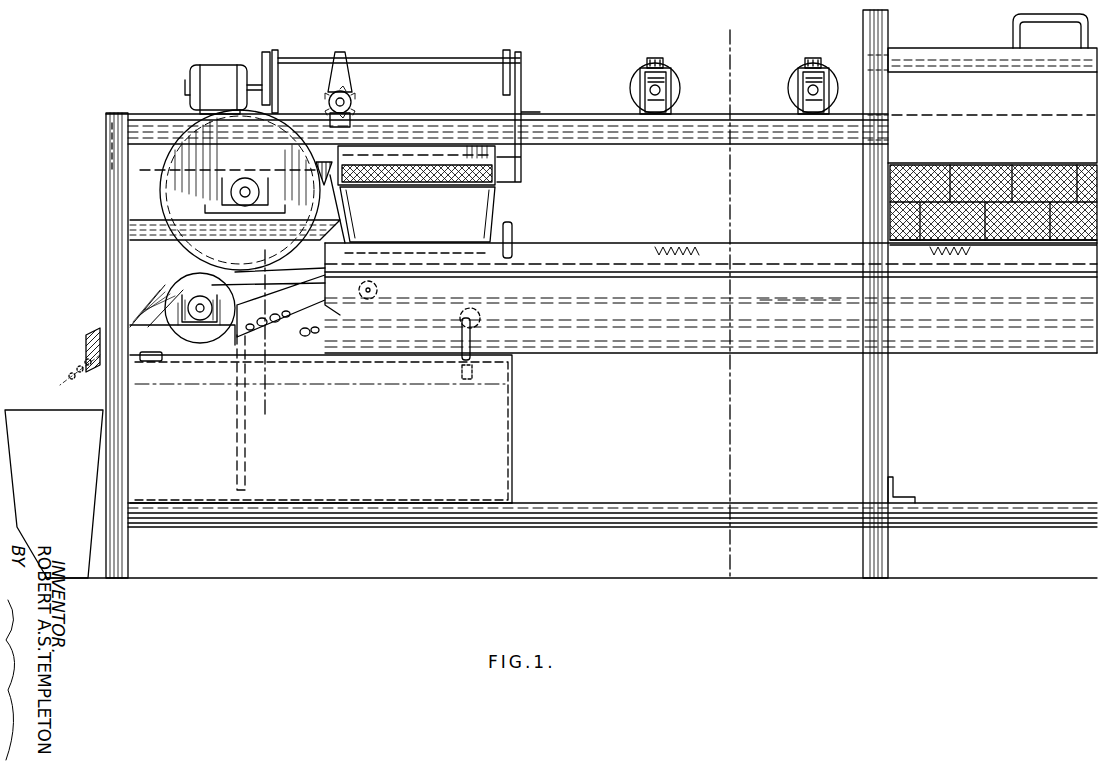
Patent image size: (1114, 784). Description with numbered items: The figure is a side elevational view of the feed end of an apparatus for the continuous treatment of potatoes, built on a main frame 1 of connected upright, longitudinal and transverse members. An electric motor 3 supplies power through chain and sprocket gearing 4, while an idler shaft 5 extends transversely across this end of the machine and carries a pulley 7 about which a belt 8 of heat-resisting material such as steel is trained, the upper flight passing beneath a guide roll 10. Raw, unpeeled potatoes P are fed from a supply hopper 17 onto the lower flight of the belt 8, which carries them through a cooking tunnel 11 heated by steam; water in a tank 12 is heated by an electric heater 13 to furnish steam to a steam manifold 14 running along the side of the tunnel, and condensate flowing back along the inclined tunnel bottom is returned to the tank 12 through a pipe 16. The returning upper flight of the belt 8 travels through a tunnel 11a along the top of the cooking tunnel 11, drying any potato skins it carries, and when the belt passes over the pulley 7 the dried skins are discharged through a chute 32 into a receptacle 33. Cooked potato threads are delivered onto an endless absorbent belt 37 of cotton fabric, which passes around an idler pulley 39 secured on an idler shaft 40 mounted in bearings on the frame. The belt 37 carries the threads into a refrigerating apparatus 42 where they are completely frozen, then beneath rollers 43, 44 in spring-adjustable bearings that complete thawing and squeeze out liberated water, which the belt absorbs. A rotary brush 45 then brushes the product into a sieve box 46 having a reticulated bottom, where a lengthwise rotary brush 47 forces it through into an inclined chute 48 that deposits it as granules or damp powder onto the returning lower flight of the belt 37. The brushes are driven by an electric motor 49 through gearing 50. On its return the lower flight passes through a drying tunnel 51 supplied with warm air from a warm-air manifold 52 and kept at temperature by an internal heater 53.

The main frame 1 is at (104, 190).
The electric motor 3 is at (738, 28).
The chain and sprocket gearing 4 is at (280, 258).
The idler shaft 5 is at (203, 312).
The pulley 7 is at (190, 283).
The belt or band 8 is at (716, 302).
The guide roll 10 is at (378, 290).
The cooking tunnel 11 is at (795, 347).
The tunnel 11a is at (800, 289).
The tank 12 is at (321, 429).
The electric heater 13 is at (347, 480).
The steam manifold 14 is at (458, 322).
The pipe 16 is at (235, 412).
The supply hopper 17 is at (322, 170).
The chute 32 is at (92, 346).
The receptacle 33 is at (54, 494).
The endless absorbent belt 37 is at (752, 114).
The idler pulley 39 is at (230, 190).
The idler shaft 40 is at (246, 190).
The refrigerating apparatus 42 is at (992, 88).
The roller 43 is at (672, 80).
The roller 44 is at (796, 80).
The rotary brush 45 is at (352, 100).
The sieve box 46 is at (430, 150).
The rotary brush 47 is at (437, 165).
The chute 48 is at (417, 214).
The electric motor 49 is at (222, 70).
The chain and sprocket or belt gearing 50 is at (274, 55).
The drying tunnel 51 is at (810, 245).
The warm-air manifold 52 is at (514, 230).
The internal heater 53 is at (676, 237).
The raw, unpeeled potatoes P is at (66, 380).